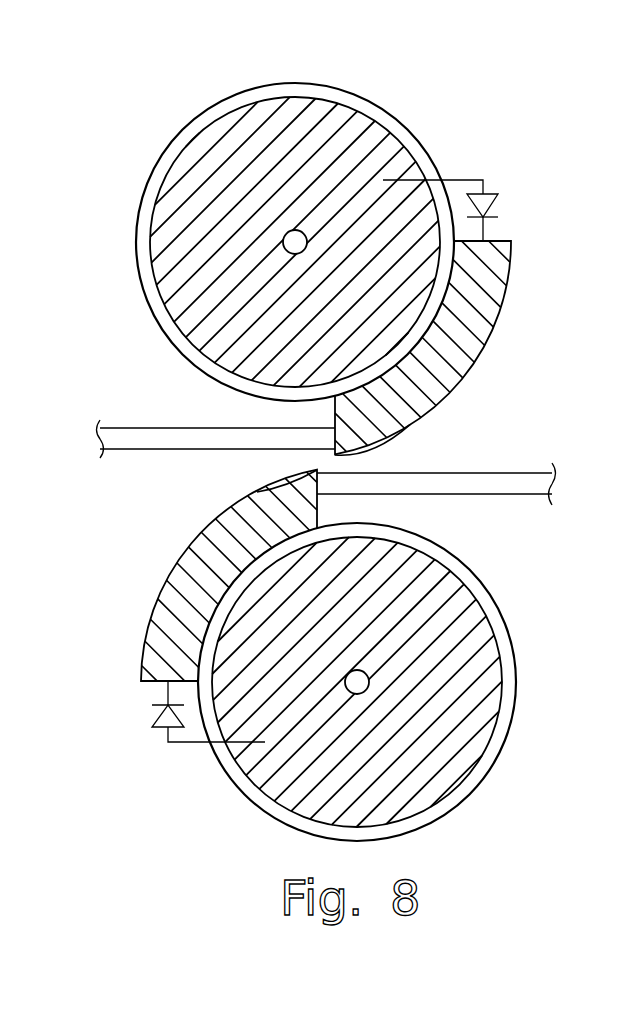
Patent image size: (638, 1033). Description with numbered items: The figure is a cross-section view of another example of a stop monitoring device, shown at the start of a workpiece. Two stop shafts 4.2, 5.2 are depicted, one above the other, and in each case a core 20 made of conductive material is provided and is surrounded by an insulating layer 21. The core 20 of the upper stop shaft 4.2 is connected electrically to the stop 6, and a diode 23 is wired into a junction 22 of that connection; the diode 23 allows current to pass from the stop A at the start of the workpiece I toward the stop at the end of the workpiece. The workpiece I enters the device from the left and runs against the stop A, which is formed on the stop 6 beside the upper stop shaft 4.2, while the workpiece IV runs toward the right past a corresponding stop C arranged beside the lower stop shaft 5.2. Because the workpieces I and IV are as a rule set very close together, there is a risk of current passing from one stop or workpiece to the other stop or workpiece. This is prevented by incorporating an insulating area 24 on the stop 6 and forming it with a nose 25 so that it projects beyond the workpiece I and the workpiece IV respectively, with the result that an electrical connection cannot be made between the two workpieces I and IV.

The stop shaft 4.2 is at (297, 215).
The core 20 is at (318, 112).
The insulating layer 21 is at (170, 143).
The junction 22 is at (462, 180).
The diode 23 is at (483, 200).
The stop 6 is at (462, 347).
The stop A is at (468, 352).
The insulating area 24 is at (382, 437).
The workpiece I is at (150, 440).
The nose 25 is at (337, 452).
The stop C is at (197, 560).
The workpiece IV is at (502, 483).
The stop shaft 5.2 is at (518, 667).